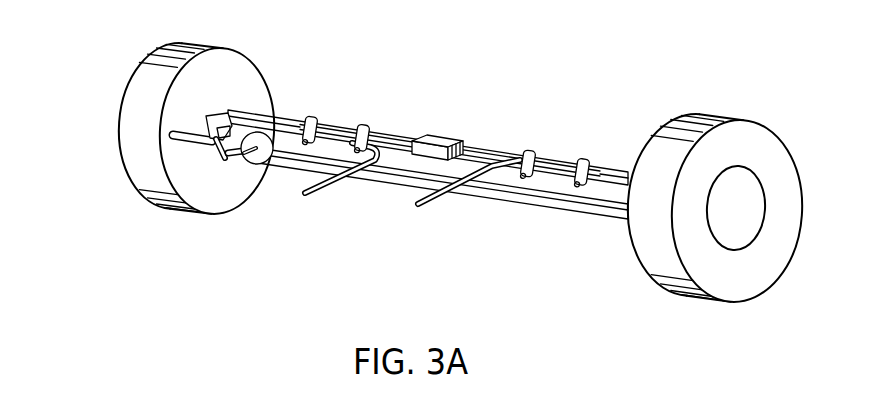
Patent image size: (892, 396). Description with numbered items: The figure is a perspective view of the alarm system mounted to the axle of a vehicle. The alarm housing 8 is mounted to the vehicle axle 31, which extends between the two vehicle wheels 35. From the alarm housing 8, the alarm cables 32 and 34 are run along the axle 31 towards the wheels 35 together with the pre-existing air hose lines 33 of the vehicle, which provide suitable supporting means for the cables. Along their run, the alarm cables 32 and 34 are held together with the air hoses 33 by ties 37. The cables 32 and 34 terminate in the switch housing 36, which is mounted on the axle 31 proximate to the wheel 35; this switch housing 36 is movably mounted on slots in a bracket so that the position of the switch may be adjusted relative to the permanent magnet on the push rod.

The alarm housing 8 is at (432, 140).
The vehicle axle 31 is at (489, 199).
The cable 32 is at (284, 117).
The air hose lines 33 is at (352, 176).
The cable 34 is at (566, 163).
The vehicle wheels 35 is at (121, 146).
The switch housing 36 is at (212, 120).
The ties 37 is at (371, 128).